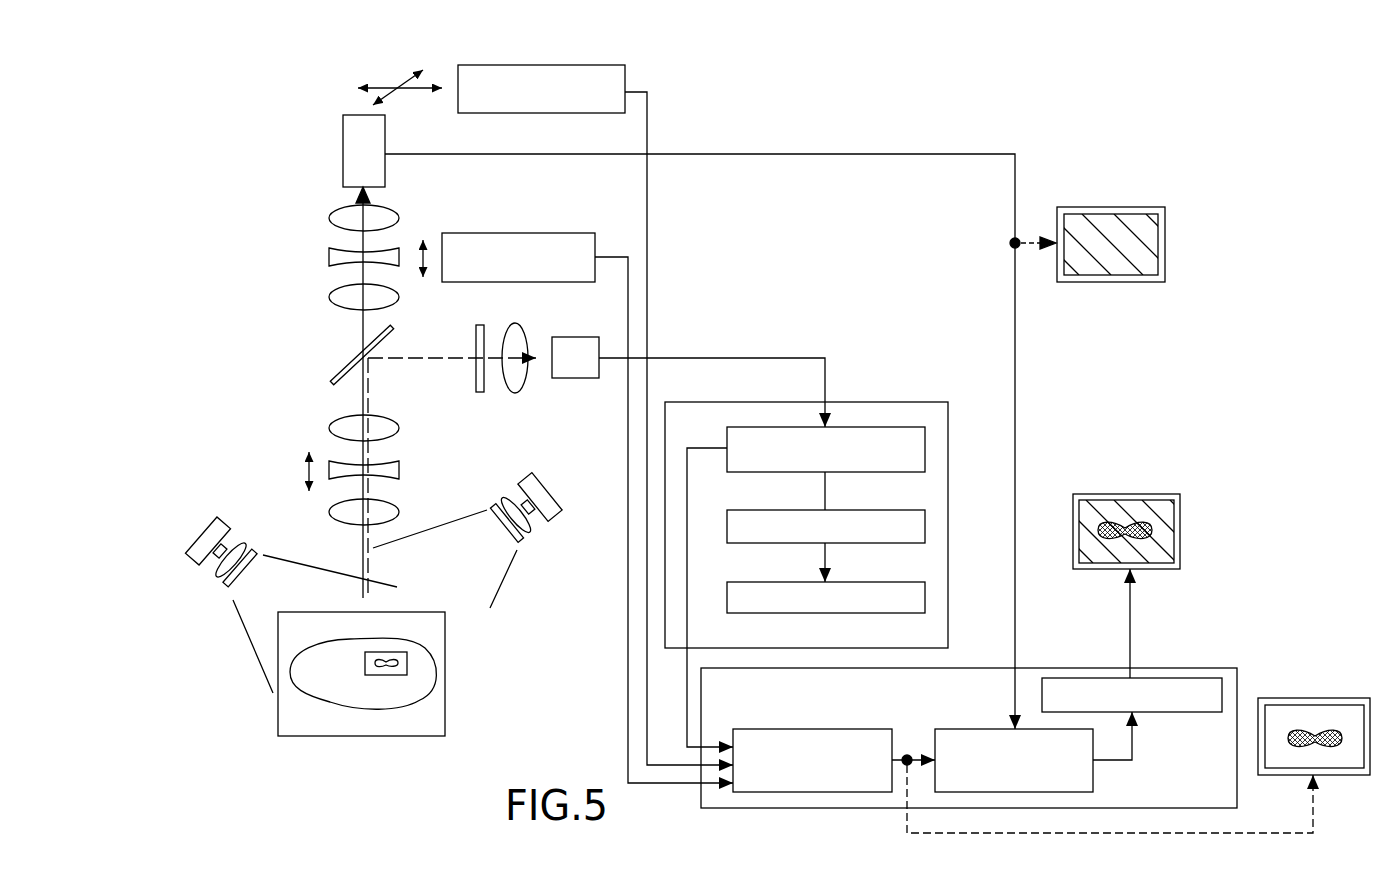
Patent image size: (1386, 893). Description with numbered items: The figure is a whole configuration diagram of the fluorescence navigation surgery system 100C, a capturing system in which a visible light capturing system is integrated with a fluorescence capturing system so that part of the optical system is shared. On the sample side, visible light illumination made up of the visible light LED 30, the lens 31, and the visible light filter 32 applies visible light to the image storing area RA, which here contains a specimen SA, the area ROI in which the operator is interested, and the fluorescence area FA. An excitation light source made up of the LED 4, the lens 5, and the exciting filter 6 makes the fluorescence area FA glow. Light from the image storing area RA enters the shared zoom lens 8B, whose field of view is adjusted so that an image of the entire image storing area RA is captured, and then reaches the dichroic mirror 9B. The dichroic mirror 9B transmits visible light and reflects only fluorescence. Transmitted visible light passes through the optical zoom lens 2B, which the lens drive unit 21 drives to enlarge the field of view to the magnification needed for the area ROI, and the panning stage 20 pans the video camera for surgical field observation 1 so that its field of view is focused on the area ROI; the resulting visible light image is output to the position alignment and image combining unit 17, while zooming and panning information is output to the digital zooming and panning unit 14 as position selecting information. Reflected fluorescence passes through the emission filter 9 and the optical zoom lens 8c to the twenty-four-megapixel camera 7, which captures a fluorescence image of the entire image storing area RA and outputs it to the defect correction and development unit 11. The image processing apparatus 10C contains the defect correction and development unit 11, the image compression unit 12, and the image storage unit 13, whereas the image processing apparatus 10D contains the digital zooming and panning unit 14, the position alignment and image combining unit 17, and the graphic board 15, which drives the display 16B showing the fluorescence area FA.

The fluorescence navigation surgery system 100C is at (1072, 99).
The video camera for surgical field observation 1 is at (343, 150).
The panning stage 20 is at (627, 82).
The lens drive unit 21 is at (562, 233).
The optical zoom lens 2B is at (310, 205).
The dichroic mirror 9B is at (397, 333).
The emission filter 9 is at (480, 393).
The optical zoom lens 8c is at (515, 393).
The 24M pixel camera 7 is at (583, 378).
The zoom lens 8B is at (310, 420).
The LED 4 is at (544, 490).
The lens 5 is at (521, 537).
The exciting filter 6 is at (514, 546).
The visible light LED 30 is at (205, 532).
The lens 31 is at (216, 578).
The visible light filter 32 is at (228, 594).
The image storing area RA is at (293, 736).
The sample SA is at (350, 710).
The area in which the operator is interested ROI is at (397, 676).
The fluorescence area FA is at (400, 664).
The image processing apparatus 10C is at (887, 402).
The defect correction and development unit 11 is at (873, 472).
The image compression unit 12 is at (873, 543).
The image storage unit 13 is at (873, 613).
The image processing apparatus 10D is at (1214, 668).
The digital zooming and panning unit 14 is at (782, 729).
The position alignment and image combining unit 17 is at (986, 729).
The graphic board 15 is at (1190, 712).
The display monitor 16B is at (1183, 491).